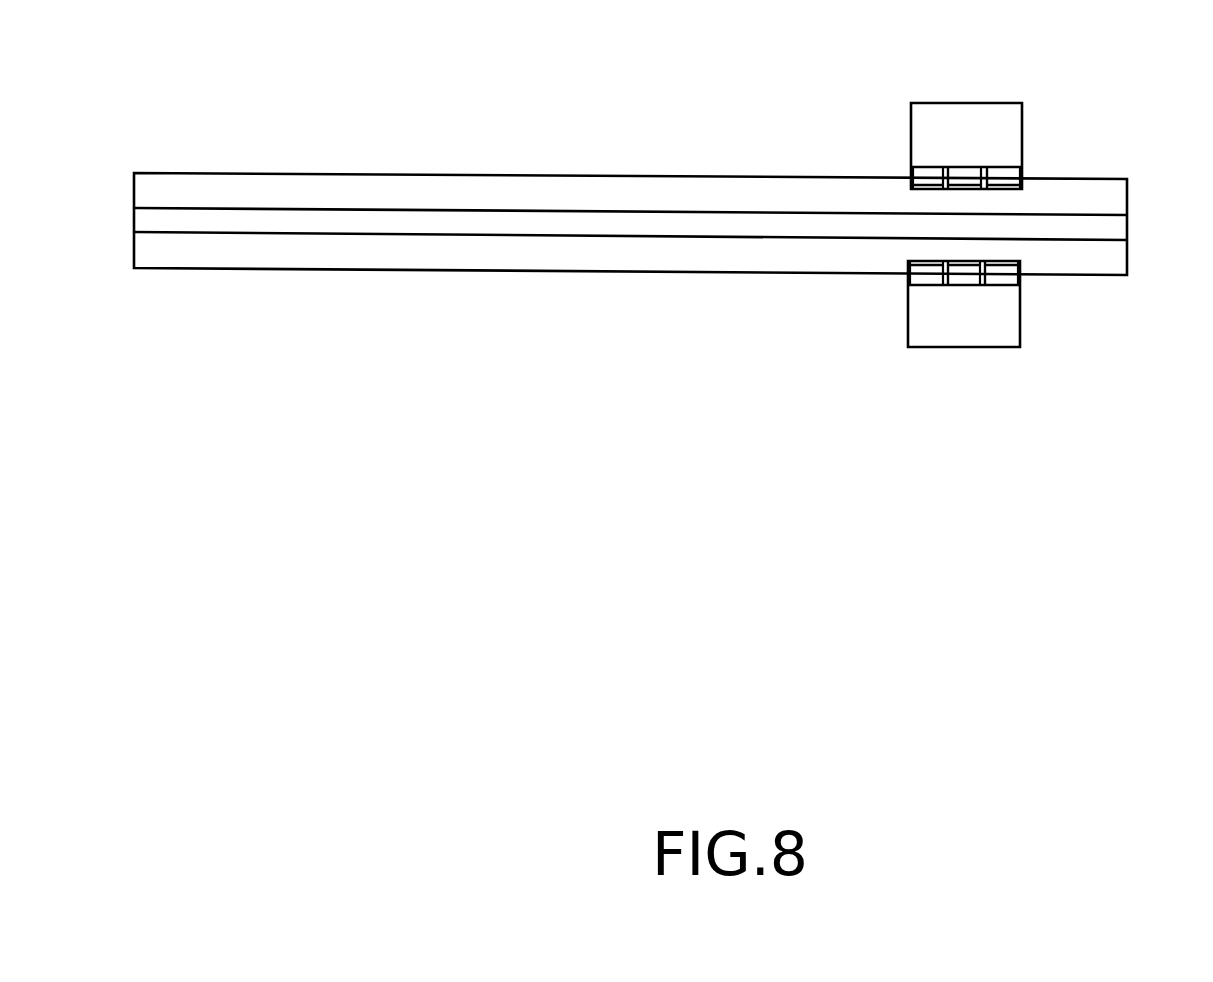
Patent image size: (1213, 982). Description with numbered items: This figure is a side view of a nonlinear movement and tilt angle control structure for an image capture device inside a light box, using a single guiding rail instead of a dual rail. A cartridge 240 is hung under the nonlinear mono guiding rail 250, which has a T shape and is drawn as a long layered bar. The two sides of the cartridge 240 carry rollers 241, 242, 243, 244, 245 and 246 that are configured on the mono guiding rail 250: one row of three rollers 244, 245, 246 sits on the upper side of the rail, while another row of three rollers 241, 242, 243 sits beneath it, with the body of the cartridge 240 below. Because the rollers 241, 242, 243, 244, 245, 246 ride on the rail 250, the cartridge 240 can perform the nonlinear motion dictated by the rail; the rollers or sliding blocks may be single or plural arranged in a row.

The cartridge 240 is at (1000, 333).
The roller 241 is at (905, 278).
The roller 242 is at (963, 278).
The roller 243 is at (1020, 280).
The roller 244 is at (928, 178).
The roller 245 is at (964, 173).
The roller 246 is at (1003, 177).
The nonlinear mono guiding rail 250 is at (772, 258).